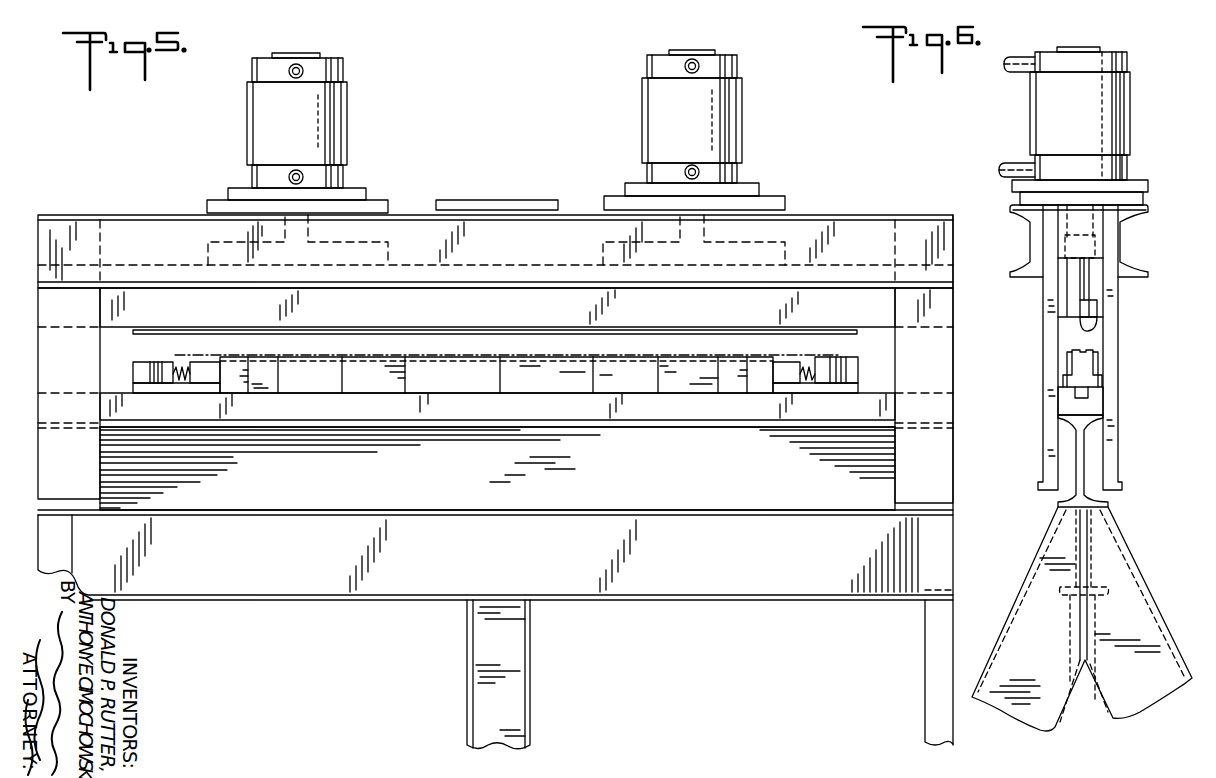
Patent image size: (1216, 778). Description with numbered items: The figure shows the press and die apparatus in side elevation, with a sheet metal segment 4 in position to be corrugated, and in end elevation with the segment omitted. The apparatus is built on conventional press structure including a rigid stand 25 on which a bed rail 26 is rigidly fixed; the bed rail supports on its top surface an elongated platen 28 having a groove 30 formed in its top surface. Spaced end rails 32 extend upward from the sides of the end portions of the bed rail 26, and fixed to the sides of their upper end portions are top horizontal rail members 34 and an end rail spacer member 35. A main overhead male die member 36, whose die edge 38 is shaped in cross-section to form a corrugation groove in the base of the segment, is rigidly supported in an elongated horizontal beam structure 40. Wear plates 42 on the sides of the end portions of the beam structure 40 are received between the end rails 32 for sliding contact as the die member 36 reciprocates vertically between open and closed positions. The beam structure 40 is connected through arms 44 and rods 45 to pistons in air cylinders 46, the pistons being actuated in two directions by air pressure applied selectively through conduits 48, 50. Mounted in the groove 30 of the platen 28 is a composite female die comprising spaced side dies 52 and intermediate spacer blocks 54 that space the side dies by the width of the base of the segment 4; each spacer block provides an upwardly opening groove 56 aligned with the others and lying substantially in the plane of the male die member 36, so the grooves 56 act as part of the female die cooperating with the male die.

In FIG. 5, the sheet metal segment 4 is at (188, 358).
In FIG. 5, the rigid stand 25 is at (903, 608).
In FIG. 6, the rigid stand 25 is at (1026, 567).
In FIG. 5, the bed rail 26 is at (506, 465).
In FIG. 6, the bed rail 26 is at (1083, 478).
In FIG. 6, the platen 28 is at (1100, 410).
In FIG. 6, the groove 30 is at (1086, 404).
In FIG. 5, the end rails 32 is at (76, 473).
In FIG. 6, the end rails 32 is at (1050, 344).
In FIG. 5, the top horizontal rail members 34 is at (786, 268).
In FIG. 6, the top horizontal rail members 34 is at (1040, 238).
In FIG. 5, the end rail spacer member 35 is at (882, 260).
In FIG. 6, the end rail spacer member 35 is at (1062, 216).
In FIG. 5, the main overhead male die member 36 is at (571, 333).
In FIG. 6, the main overhead male die member 36 is at (1085, 303).
In FIG. 5, the die edge 38 is at (660, 326).
In FIG. 6, the die edge 38 is at (1090, 329).
In FIG. 5, the beam structure 40 is at (530, 309).
In FIG. 6, the beam structure 40 is at (1070, 288).
In FIG. 6, the wear plates 42 is at (1058, 276).
In FIG. 6, the arms 44 is at (1095, 247).
In FIG. 6, the rods 45 is at (1124, 222).
In FIG. 5, the air cylinders 46 is at (325, 120).
In FIG. 6, the air cylinders 46 is at (1115, 118).
In FIG. 5, the conduit 48 is at (303, 69).
In FIG. 6, the conduit 48 is at (1008, 70).
In FIG. 5, the conduit 50 is at (303, 177).
In FIG. 6, the conduit 50 is at (1008, 165).
In FIG. 5, the side dies 52 is at (189, 402).
In FIG. 5, the spacer blocks 54 is at (533, 400).
In FIG. 5, the groove 56 is at (420, 356).